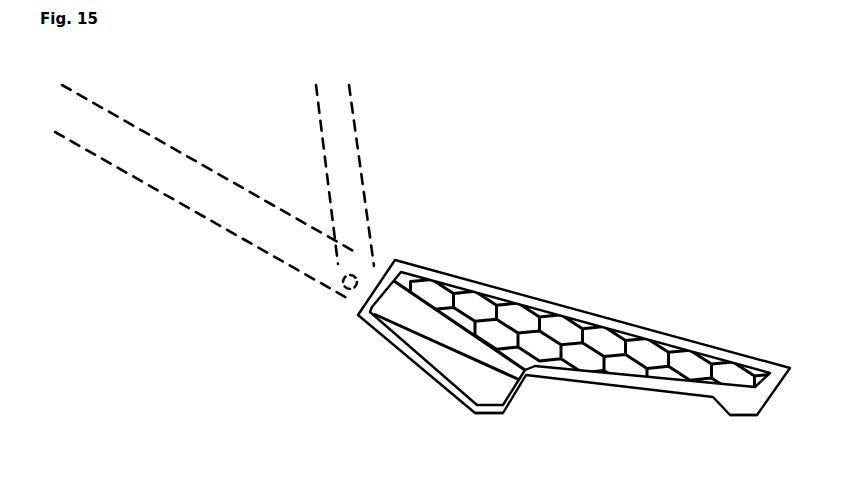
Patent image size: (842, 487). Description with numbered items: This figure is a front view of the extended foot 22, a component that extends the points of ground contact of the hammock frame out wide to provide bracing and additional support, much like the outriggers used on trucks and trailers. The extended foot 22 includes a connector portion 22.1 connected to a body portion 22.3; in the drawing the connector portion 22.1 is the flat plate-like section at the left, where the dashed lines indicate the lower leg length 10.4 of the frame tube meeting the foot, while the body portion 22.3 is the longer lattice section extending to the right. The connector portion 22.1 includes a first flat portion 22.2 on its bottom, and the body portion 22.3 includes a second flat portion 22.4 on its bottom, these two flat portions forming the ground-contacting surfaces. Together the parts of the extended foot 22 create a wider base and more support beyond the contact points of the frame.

The lower leg length 10.4 is at (246, 247).
The extended foot 22 is at (405, 360).
The connector portion 22.1 is at (432, 382).
The first flat portion 22.2 is at (493, 418).
The body portion 22.3 is at (537, 296).
The second flat portion 22.4 is at (749, 417).